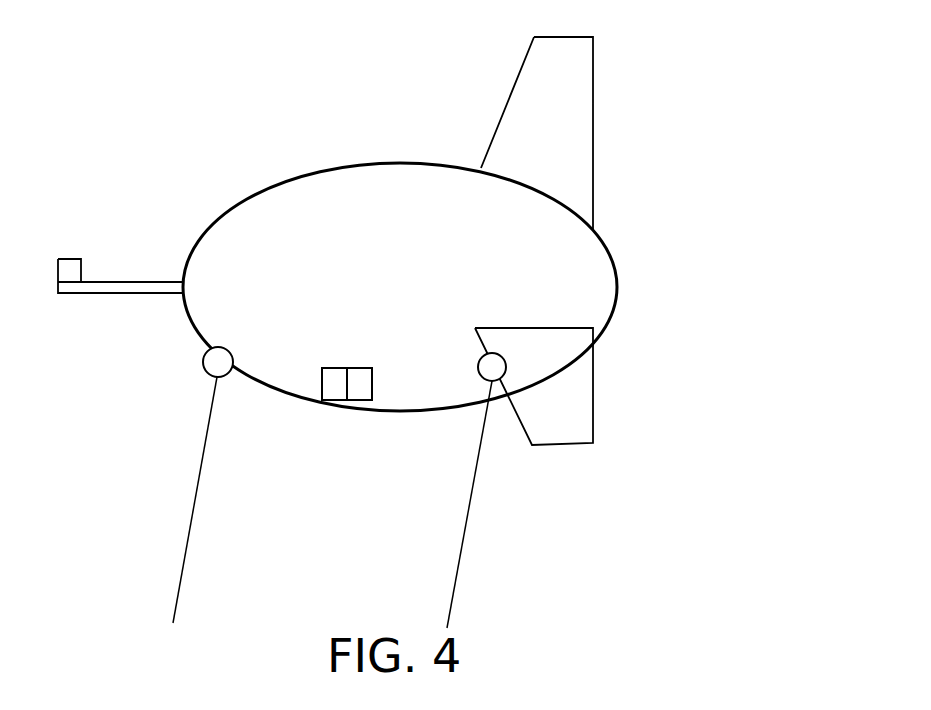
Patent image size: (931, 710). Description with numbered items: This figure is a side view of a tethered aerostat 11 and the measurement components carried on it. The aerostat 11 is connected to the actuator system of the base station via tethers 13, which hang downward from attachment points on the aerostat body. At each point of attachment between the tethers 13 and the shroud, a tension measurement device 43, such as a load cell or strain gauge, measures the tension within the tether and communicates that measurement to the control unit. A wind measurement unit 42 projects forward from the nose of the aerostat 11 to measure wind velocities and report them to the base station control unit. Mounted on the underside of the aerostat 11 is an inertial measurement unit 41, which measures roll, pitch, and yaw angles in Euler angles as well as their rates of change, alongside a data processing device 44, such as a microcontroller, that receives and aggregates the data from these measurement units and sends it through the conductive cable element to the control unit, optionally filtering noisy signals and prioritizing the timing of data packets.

The aerostat 11 is at (336, 166).
The tethers 13 is at (180, 593).
The inertial measurement unit 41 is at (335, 400).
The wind measurement unit 42 is at (70, 259).
The tension measurement device 43 is at (205, 370).
The data processing device 44 is at (360, 400).